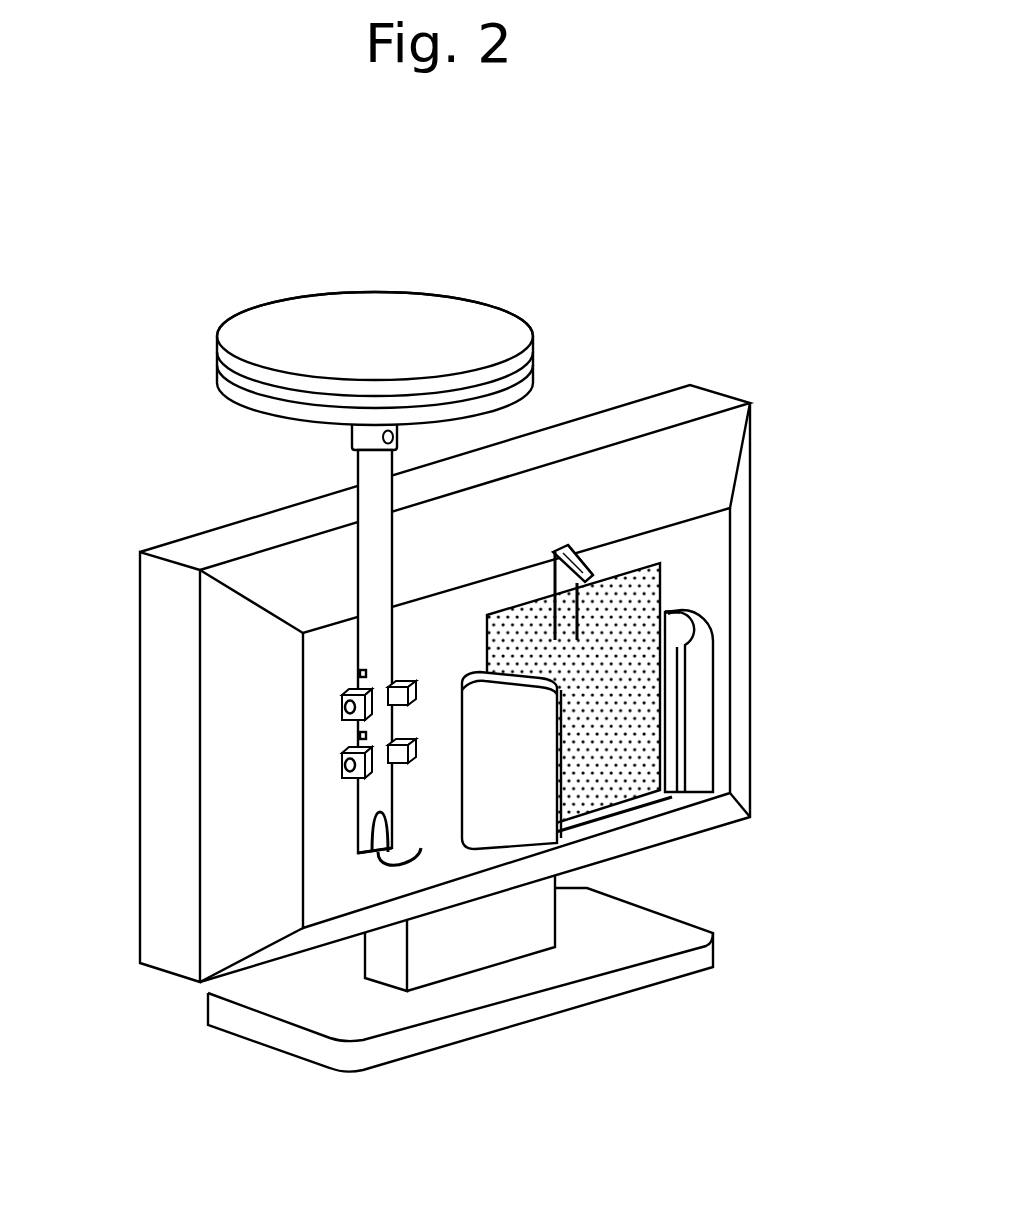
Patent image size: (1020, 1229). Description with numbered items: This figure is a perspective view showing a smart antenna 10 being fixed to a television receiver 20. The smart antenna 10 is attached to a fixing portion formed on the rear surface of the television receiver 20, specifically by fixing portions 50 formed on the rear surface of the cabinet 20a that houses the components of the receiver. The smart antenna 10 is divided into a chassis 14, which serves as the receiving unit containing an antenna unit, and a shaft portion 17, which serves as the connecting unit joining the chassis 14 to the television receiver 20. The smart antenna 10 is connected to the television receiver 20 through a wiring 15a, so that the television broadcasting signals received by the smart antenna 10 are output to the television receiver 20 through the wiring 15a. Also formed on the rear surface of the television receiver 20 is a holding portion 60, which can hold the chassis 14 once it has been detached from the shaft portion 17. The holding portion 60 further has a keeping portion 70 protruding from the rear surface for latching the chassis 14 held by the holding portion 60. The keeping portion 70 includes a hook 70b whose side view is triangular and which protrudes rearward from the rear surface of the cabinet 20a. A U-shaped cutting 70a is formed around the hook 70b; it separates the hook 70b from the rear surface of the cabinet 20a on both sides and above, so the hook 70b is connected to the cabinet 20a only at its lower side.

The smart antenna 10 is at (213, 293).
The chassis 14 is at (382, 307).
The wiring 15a is at (412, 857).
The shaft portion 17 is at (355, 470).
The television receiver 20 is at (757, 387).
The cabinet 20a is at (722, 450).
The fixing portions 50 is at (330, 775).
The holding portion 60 is at (690, 600).
The keeping portion 70 is at (593, 555).
The U-shaped cutting 70a is at (553, 551).
The hook 70b is at (567, 547).